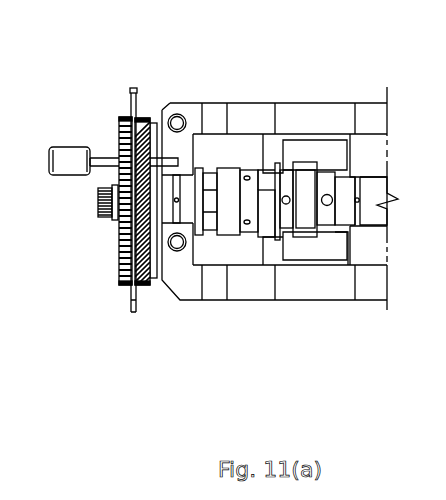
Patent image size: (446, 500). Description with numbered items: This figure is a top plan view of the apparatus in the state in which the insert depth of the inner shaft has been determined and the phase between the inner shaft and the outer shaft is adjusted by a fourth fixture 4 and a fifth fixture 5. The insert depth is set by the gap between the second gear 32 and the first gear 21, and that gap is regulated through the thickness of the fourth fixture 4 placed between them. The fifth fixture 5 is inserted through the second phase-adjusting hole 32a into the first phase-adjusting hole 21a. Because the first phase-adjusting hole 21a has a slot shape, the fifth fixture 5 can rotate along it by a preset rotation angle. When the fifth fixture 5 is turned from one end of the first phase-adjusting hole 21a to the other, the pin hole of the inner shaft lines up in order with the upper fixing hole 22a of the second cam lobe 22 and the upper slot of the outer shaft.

The fourth fixture 4 is at (134, 92).
The fifth fixture 5 is at (71, 143).
The first gear 21 is at (141, 290).
The first phase-adjusting hole 21a is at (153, 155).
The second cam lobe 22 is at (302, 178).
The upper fixing hole 22a is at (327, 207).
The second gear 32 is at (122, 290).
The second phase-adjusting hole 32a is at (121, 163).